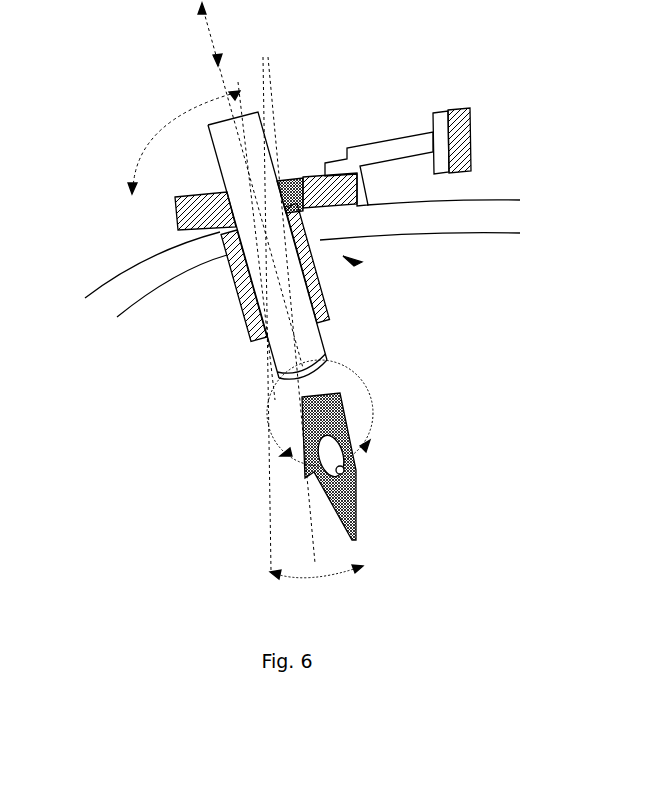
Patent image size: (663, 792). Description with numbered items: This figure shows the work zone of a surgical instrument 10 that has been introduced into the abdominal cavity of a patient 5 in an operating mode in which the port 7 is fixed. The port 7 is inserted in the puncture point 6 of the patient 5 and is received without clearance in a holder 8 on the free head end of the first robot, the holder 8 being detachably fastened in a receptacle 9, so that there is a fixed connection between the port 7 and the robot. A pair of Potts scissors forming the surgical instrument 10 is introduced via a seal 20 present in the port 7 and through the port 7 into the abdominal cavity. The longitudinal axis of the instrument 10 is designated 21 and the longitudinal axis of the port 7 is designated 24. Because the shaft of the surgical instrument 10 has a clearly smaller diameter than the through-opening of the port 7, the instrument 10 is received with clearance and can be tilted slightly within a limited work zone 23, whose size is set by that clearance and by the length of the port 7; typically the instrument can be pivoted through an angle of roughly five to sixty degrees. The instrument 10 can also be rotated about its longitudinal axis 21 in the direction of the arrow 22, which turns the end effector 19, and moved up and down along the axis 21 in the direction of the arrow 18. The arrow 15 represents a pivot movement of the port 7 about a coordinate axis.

The patient 5 is at (478, 224).
The puncture point 6 is at (352, 261).
The port 7 is at (176, 211).
The holder 8 is at (417, 118).
The receptacle 9 is at (468, 118).
The surgical instrument 10 is at (320, 343).
The pivot movement arrow 15 is at (145, 128).
The arrow indicating up-and-down movement 18 is at (213, 43).
The end effector 19 is at (355, 470).
The seal 20 is at (257, 295).
The longitudinal axis of the instrument 21 is at (270, 363).
The arrow indicating rotation 22 is at (373, 413).
The work zone 23 is at (320, 582).
The longitudinal axis of the port 24 is at (312, 527).